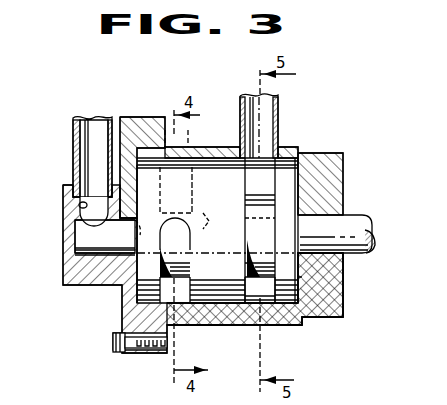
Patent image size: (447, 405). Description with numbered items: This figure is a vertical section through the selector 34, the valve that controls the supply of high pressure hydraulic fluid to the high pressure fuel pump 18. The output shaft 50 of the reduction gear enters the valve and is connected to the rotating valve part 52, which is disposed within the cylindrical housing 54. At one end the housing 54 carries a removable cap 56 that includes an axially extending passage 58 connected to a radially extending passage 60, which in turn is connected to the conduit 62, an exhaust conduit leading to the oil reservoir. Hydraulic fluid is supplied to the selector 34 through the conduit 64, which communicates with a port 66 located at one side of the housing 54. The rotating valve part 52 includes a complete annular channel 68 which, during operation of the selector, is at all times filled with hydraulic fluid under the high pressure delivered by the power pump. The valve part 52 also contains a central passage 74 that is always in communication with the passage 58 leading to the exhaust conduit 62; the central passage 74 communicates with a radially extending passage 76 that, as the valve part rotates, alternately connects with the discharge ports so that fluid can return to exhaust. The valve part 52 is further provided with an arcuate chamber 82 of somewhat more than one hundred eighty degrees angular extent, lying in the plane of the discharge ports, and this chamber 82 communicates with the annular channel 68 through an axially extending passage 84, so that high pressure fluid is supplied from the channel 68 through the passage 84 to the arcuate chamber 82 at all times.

The fuel pump 18 is at (186, 300).
The selector 34 is at (345, 318).
The output shaft 50 is at (355, 220).
The rotating valve part 52 is at (226, 201).
The cylindrical housing 54 is at (243, 323).
The removable cap 56 is at (70, 285).
The axially extending passage 58 is at (88, 250).
The radially extending passage 60 is at (79, 208).
The conduit 62 is at (73, 142).
The conduit 64 is at (270, 117).
The port 66 is at (280, 153).
The annular channel 68 is at (256, 292).
The central passage 74 is at (142, 250).
The radially extending passage 76 is at (183, 148).
The arcuate chamber 82 is at (188, 262).
The axially extending passage 84 is at (206, 278).